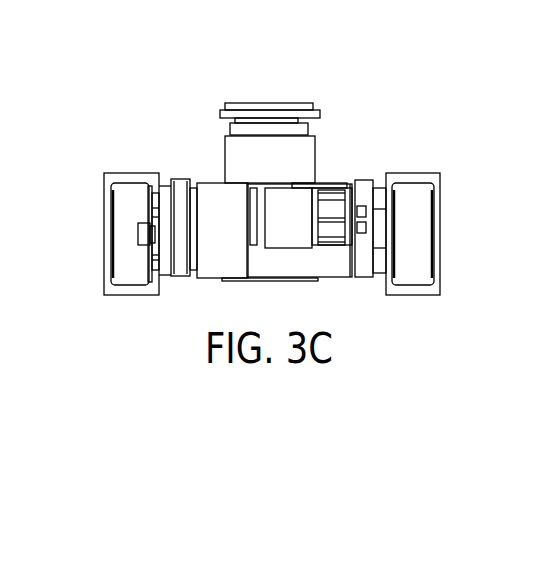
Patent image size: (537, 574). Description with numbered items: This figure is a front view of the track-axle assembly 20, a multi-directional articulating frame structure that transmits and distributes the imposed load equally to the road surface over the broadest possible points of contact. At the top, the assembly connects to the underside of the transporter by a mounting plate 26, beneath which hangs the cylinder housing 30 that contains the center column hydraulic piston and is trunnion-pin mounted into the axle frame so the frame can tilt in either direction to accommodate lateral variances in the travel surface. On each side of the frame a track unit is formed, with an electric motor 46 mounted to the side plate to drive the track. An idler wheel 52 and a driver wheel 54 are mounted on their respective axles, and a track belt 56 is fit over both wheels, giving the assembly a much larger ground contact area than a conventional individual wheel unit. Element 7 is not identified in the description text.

The track-axle assembly 20 is at (176, 76).
The mounting plate 26 is at (312, 101).
The cylinder housing 30 is at (316, 143).
The electric motor 46 is at (345, 183).
The panel 7 is at (272, 234).
The track belt 56 is at (117, 173).
The driver wheel 54 is at (125, 225).
The idler wheel 52 is at (421, 228).